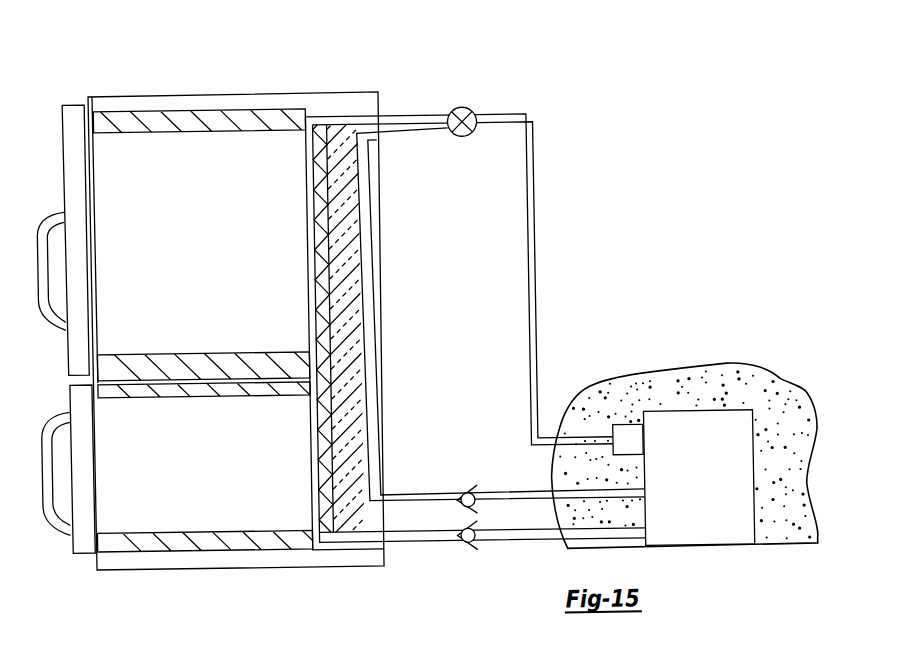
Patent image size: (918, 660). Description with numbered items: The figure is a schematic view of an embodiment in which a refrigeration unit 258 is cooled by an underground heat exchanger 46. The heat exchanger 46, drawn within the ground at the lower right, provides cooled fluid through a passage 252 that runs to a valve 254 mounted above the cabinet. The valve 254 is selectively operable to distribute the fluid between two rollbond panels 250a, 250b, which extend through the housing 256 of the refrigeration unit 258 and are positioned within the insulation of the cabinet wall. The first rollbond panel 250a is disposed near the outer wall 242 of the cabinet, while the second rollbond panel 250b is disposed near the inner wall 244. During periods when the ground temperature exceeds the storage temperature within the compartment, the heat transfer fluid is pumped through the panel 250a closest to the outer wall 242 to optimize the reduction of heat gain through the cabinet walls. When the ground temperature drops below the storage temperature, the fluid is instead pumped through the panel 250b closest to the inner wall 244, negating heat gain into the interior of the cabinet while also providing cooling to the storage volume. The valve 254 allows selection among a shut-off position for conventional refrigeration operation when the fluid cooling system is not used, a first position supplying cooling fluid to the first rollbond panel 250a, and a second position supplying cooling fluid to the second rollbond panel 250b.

The refrigeration unit 258 is at (138, 73).
The housing 256 is at (268, 96).
The valve 254 is at (462, 113).
The rollbond panel 250a is at (356, 213).
The rollbond panel 250b is at (306, 233).
The inner wall 244 is at (304, 291).
The outer wall 242 is at (379, 289).
The passage 252 is at (531, 233).
The heat exchanger 46 is at (674, 430).